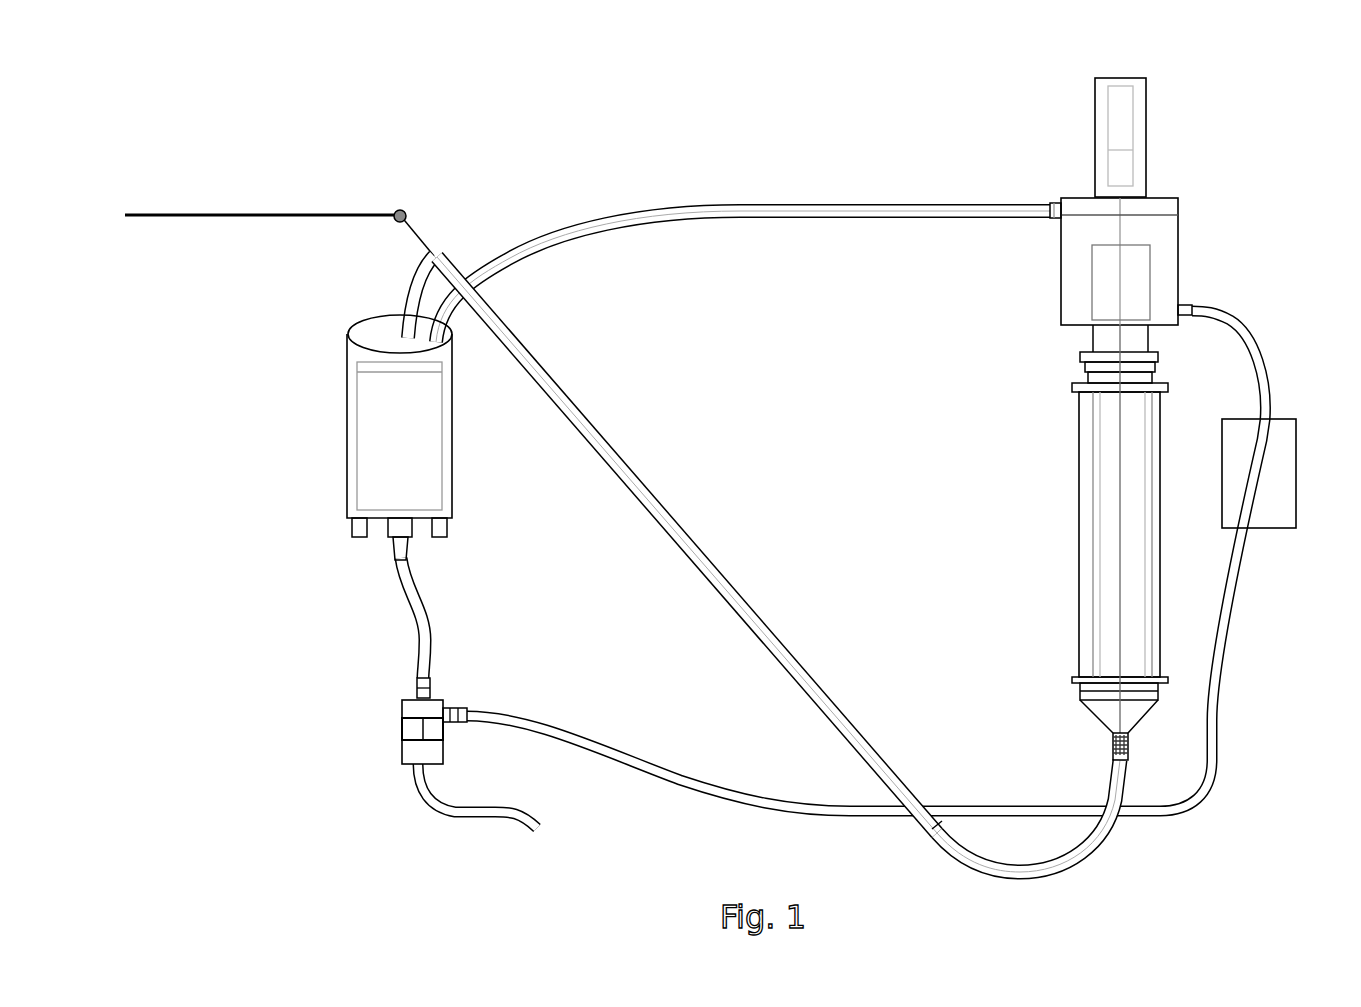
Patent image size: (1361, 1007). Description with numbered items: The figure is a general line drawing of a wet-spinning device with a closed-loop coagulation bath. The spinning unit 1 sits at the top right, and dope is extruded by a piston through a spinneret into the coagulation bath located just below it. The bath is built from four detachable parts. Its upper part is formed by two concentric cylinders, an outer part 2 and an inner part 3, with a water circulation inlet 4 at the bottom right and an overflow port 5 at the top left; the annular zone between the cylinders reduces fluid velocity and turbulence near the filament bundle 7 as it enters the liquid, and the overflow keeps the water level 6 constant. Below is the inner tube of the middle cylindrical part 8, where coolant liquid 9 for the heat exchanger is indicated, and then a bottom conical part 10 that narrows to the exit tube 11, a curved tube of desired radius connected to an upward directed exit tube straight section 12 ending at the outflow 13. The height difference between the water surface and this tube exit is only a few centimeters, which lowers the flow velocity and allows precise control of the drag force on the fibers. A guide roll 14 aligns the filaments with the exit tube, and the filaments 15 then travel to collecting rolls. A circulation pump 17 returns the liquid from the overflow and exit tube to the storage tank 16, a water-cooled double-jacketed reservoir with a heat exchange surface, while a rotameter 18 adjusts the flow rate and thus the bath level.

The spinning unit 1 is at (1148, 121).
The outer part of upper part 2 is at (1182, 216).
The inner part of upper part 3 is at (1152, 264).
The water circulation inlet 4 is at (1192, 308).
The overflow port 5 is at (1048, 209).
The water level in upper part 6 is at (1090, 212).
The filament bundle 7 is at (1116, 474).
The inner tube of middle cylindrical part 8 is at (1094, 566).
The coolant liquid for heat exchanger 9 is at (1090, 663).
The bottom conical part 10 is at (1108, 712).
The exit tube 11 is at (1058, 853).
The exit tube straight section 12 is at (622, 455).
The outflow from exit tube 13 is at (447, 257).
The guide roll 14 is at (402, 211).
The filaments to collecting rolls 15 is at (134, 212).
The storage tank with heat exchange surface 16 is at (365, 345).
The circulation pump 17 is at (403, 713).
The rotameter 18 is at (1293, 420).